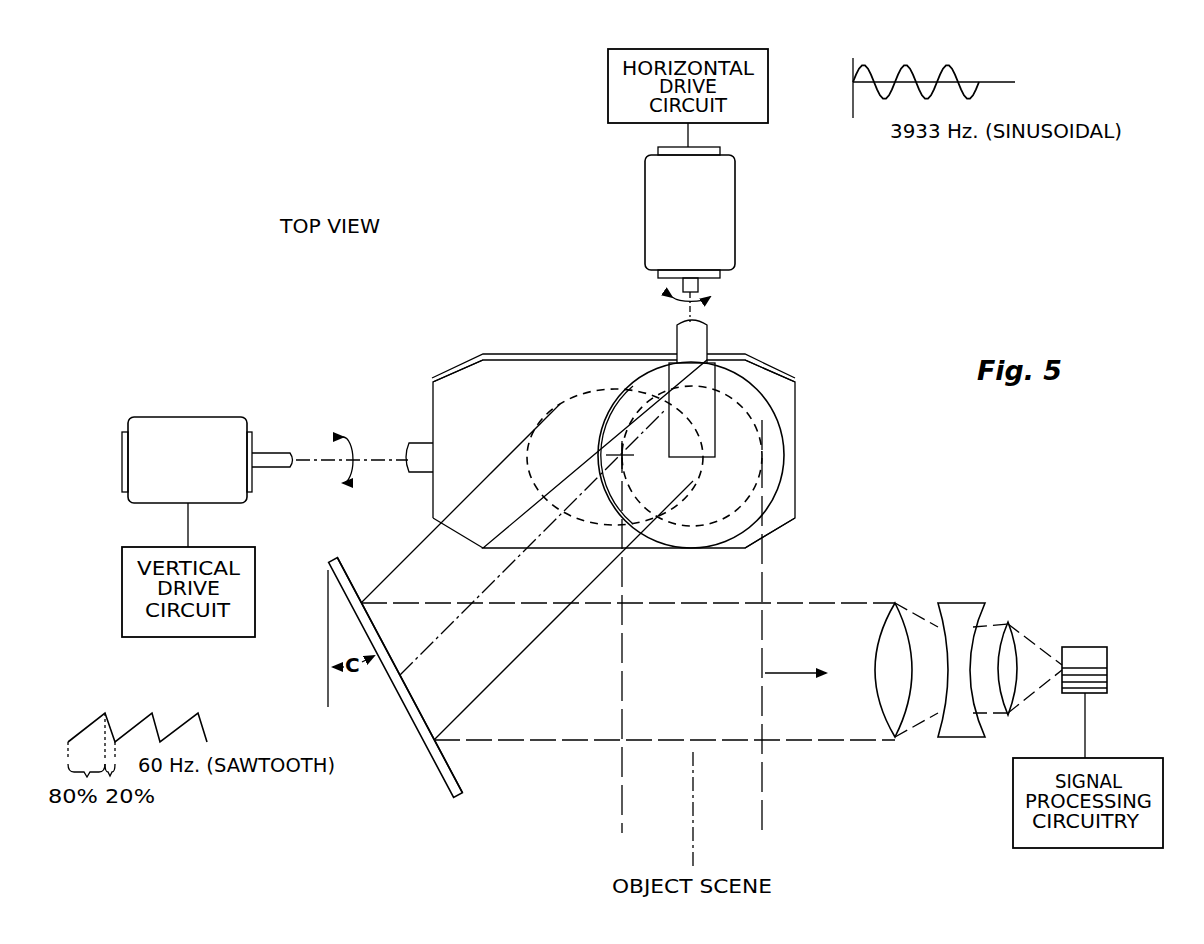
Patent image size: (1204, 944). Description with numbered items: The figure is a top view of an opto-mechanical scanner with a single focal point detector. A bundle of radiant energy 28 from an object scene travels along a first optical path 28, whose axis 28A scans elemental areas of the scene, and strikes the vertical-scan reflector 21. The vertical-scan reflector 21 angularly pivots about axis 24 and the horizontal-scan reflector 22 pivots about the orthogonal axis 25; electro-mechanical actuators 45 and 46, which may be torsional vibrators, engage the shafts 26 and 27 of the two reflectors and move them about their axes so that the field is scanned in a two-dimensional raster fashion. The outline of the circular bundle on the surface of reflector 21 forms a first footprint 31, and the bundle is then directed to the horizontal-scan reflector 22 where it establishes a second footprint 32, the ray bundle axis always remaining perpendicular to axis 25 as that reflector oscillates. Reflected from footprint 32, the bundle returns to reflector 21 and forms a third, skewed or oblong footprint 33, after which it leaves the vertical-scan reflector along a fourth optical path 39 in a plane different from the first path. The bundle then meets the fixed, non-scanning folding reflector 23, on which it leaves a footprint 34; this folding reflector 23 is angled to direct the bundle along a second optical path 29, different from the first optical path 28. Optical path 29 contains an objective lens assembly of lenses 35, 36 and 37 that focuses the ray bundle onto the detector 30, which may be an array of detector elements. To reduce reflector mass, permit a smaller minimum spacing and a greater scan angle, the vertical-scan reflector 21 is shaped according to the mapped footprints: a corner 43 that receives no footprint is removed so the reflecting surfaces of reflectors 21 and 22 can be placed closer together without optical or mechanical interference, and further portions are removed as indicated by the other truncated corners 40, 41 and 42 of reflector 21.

The vertical-scan reflector 21 is at (534, 353).
The horizontal-scan reflector 22 is at (783, 485).
The fixed folding reflector 23 is at (427, 748).
The vertical-scan reflector axis 24 is at (364, 458).
The horizontal-scan reflector axis 25 is at (697, 302).
The shaft of reflector 21 26 is at (428, 443).
The shaft of reflector 22 27 is at (708, 337).
The bundle of radiant energy / first optical path 28 is at (618, 782).
The axis of ray bundle 28 28A is at (693, 800).
The second optical path 29 is at (806, 603).
The detector 30 is at (1078, 647).
The first footprint 31 is at (753, 456).
The second footprint 32 is at (753, 422).
The third footprint 33 is at (556, 410).
The footprint on folding reflector 34 is at (412, 692).
The lens 35 is at (902, 603).
The lens 36 is at (957, 603).
The lens 37 is at (1008, 622).
The fourth optical path 39 is at (538, 534).
The truncated corner of reflector 21 40 is at (791, 531).
The truncated corner of reflector 21 41 is at (424, 538).
The truncated corner of reflector 21 42 is at (461, 355).
The removed corner of reflector 21 43 is at (786, 343).
The electro-mechanical actuator 45 is at (192, 417).
The electro-mechanical actuator 46 is at (645, 210).